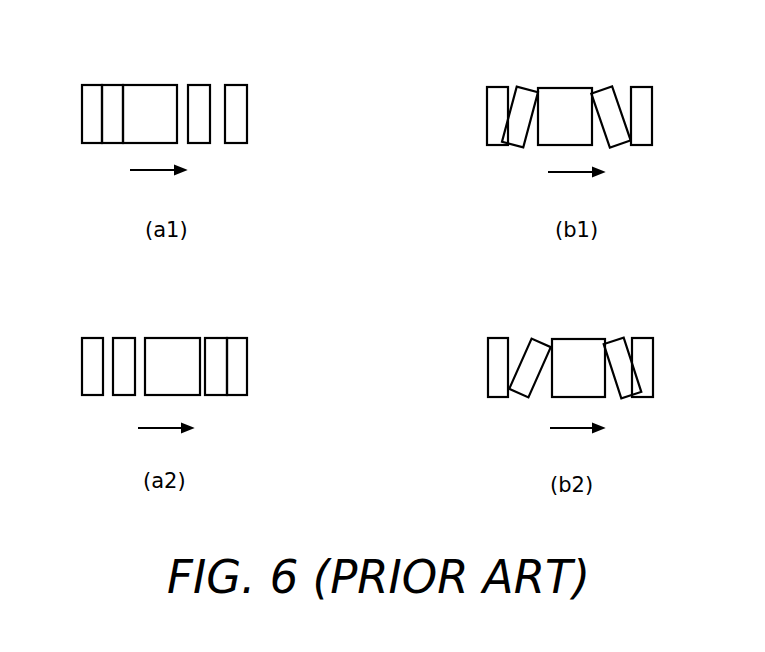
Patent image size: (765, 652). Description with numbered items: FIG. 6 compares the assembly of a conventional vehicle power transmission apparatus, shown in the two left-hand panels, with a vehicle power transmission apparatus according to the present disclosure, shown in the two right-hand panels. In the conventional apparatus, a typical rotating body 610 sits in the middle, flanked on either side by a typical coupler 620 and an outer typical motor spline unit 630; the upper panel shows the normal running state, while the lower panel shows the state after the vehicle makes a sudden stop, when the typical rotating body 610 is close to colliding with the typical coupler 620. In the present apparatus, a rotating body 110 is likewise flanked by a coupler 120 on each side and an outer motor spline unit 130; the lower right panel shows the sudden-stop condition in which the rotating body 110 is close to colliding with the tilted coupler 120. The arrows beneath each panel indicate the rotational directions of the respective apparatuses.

The typical rotating body 610 is at (168, 87).
The typical coupler 620 is at (110, 145).
The typical motor spline unit 630 is at (83, 85).
The rotating body 110 is at (578, 87).
The coupler 120 is at (517, 148).
The outer plate member 130 is at (498, 85).